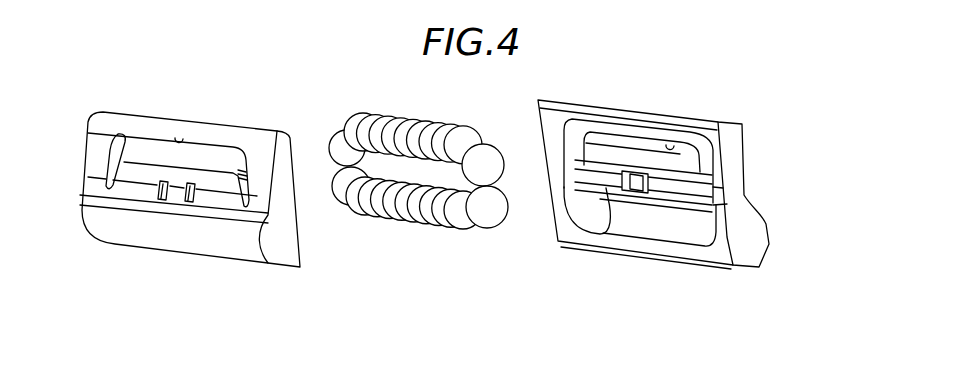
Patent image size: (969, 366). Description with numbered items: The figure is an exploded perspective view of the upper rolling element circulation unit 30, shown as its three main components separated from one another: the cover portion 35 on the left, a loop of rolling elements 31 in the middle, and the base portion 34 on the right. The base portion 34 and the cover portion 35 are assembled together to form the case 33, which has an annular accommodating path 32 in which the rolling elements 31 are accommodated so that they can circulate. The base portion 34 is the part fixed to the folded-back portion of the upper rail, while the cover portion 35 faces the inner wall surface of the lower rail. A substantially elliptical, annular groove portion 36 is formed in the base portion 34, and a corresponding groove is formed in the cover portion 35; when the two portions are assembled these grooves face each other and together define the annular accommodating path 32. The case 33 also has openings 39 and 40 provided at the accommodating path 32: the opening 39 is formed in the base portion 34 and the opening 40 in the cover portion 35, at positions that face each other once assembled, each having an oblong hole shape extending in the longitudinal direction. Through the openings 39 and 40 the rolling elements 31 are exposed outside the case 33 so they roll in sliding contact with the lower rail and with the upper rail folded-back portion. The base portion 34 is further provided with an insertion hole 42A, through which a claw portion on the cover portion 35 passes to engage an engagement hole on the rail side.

The rolling element circulation unit 30 is at (774, 363).
The rolling elements 31 is at (423, 118).
The annular accommodating path 32 is at (737, 224).
The case 33 is at (658, 299).
The base portion 34 is at (595, 252).
The cover portion 35 is at (222, 262).
The groove portion 36 is at (690, 233).
The opening 39 is at (670, 141).
The opening 40 is at (180, 136).
The insertion hole 42A is at (620, 177).